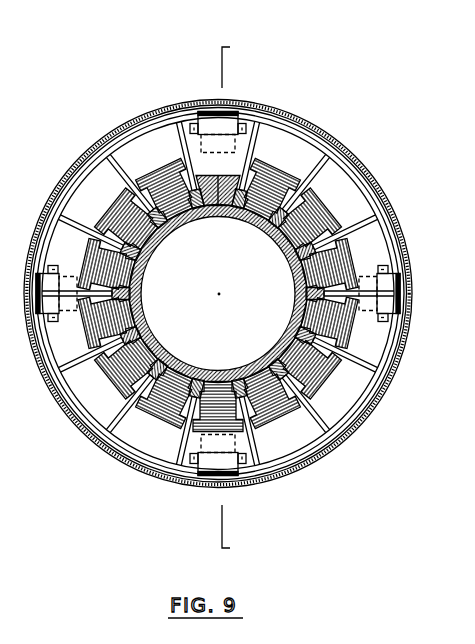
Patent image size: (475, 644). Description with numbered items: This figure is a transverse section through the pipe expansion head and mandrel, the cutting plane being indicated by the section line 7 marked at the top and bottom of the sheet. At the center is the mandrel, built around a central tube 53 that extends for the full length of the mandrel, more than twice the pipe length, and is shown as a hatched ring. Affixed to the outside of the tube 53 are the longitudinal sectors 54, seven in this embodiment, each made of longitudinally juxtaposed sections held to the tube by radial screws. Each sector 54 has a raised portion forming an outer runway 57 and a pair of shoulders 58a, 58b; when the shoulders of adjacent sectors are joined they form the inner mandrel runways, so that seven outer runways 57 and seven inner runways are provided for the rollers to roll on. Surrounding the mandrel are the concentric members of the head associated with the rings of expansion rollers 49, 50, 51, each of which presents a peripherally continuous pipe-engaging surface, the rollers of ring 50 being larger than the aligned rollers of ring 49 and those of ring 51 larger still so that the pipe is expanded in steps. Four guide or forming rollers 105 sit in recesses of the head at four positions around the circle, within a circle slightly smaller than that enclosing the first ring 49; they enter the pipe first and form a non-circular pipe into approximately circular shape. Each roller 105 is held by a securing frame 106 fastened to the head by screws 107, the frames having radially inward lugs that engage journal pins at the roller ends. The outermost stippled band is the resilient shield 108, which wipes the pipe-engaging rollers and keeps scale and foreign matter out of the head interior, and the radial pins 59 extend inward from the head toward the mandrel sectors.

The section line 7— 7 is at (232, 305).
The first ring of expansion rollers 49 is at (285, 113).
The second ring of expansion rollers 50 is at (311, 131).
The third ring of expansion rollers 51 is at (328, 148).
The central tube 53 is at (135, 284).
The longitudinal sectors 54 is at (256, 226).
The outer runway 57 is at (273, 172).
The shoulder 58a is at (302, 209).
The shoulder 58b is at (316, 231).
The radial pin 59 is at (301, 193).
The guide rollers 105 is at (222, 120).
The securing frames 106 is at (389, 268).
The screws 107 is at (392, 318).
The resilient shield 108 is at (354, 179).